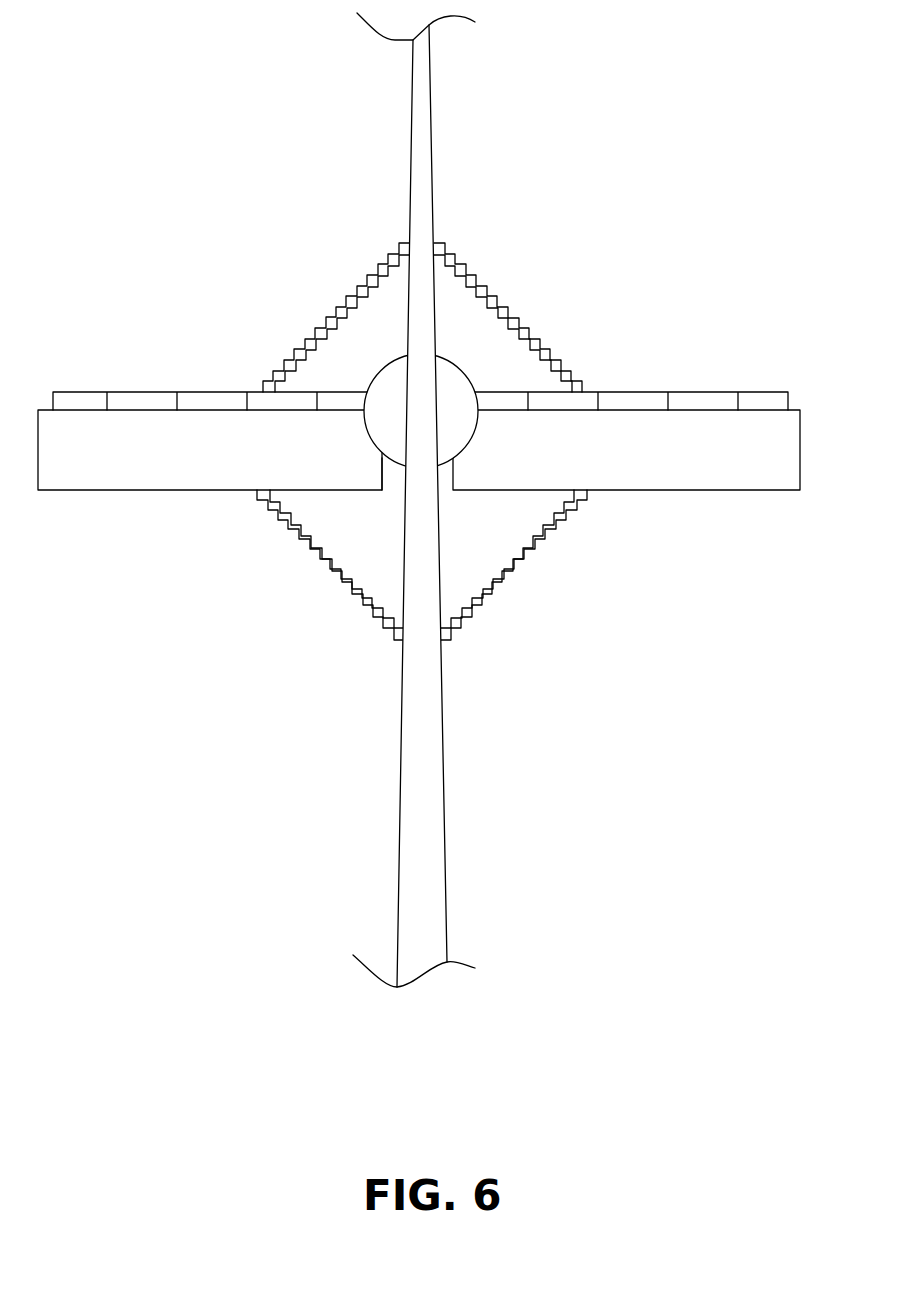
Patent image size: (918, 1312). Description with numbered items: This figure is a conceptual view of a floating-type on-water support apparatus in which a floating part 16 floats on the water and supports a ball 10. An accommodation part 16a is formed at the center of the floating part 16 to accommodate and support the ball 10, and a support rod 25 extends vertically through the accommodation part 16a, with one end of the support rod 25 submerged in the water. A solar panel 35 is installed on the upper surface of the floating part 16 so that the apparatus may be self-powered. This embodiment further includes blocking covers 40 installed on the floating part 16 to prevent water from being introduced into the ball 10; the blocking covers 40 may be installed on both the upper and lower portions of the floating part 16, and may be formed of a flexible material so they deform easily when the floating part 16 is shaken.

The ball 10 is at (458, 398).
The floating part 16 is at (752, 438).
The accommodation part 16a is at (367, 420).
The support rod 25 is at (443, 760).
The solar panel 35 is at (599, 392).
The blocking cover 40 is at (470, 263).